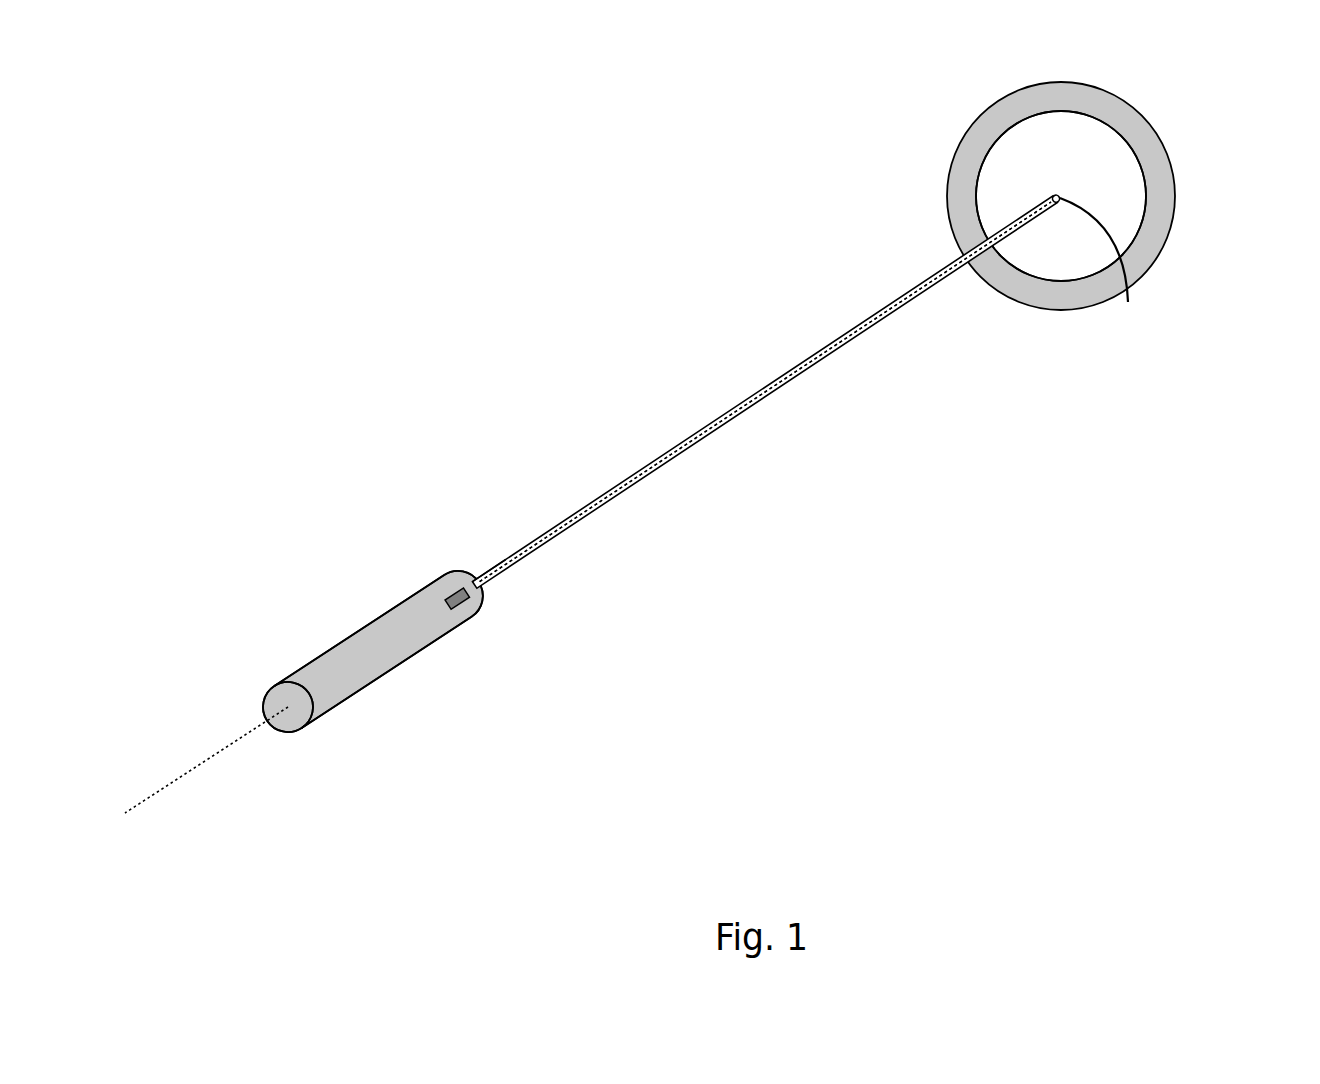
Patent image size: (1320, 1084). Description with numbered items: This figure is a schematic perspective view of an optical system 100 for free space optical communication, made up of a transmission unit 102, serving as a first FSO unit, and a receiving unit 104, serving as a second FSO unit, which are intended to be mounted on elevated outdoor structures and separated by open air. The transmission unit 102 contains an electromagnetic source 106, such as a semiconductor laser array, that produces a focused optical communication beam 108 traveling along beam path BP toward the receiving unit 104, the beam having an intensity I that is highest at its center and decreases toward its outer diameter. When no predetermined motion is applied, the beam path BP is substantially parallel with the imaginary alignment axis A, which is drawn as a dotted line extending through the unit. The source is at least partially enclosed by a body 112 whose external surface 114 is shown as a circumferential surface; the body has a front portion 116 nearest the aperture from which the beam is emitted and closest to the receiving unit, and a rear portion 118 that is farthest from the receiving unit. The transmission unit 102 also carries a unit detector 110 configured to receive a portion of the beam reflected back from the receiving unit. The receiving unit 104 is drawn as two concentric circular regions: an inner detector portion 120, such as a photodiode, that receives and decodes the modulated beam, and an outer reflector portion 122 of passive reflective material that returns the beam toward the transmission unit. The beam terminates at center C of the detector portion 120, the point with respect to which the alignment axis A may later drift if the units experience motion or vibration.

The optical system 100 is at (572, 252).
The transmission unit 102 is at (423, 670).
The receiving unit 104 is at (1113, 233).
The electromagnetic source 106 is at (498, 585).
The optical communication beam 108 is at (766, 390).
The beam path BP is at (765, 392).
The intensity I is at (790, 370).
The unit detector 110 is at (465, 600).
The body 112 is at (365, 623).
The external surface 114 is at (387, 672).
The front portion 116 is at (437, 568).
The rear portion 118 is at (290, 668).
The detector portion 120 is at (1034, 179).
The reflector portion 122 is at (1102, 112).
The center of detector portion C is at (1100, 267).
The alignment axis A is at (217, 753).